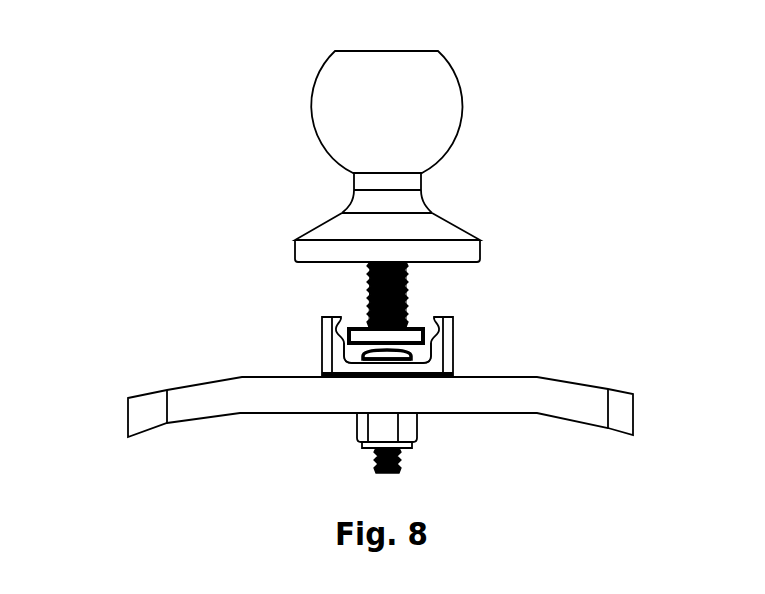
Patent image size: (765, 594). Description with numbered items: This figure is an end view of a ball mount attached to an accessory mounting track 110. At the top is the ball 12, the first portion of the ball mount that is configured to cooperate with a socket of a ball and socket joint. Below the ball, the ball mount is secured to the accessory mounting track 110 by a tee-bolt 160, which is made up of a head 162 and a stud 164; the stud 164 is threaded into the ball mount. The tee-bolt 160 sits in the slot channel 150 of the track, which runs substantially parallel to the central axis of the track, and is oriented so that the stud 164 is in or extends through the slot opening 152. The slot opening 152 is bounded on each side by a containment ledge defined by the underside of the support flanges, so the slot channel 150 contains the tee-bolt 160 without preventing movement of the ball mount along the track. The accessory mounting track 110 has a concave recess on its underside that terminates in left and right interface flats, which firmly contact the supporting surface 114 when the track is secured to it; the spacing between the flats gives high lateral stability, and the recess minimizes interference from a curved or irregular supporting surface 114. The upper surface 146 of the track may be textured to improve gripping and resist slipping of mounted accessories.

The ball 12 is at (462, 110).
The accessory mounting track 110 is at (462, 340).
The supporting surface 114 is at (257, 376).
The upper surface 146 is at (343, 331).
The slot channel 150 is at (360, 352).
The slot opening 152 is at (358, 320).
The tee-bolt 160 is at (358, 277).
The head 162 is at (428, 346).
The stud 164 is at (408, 282).